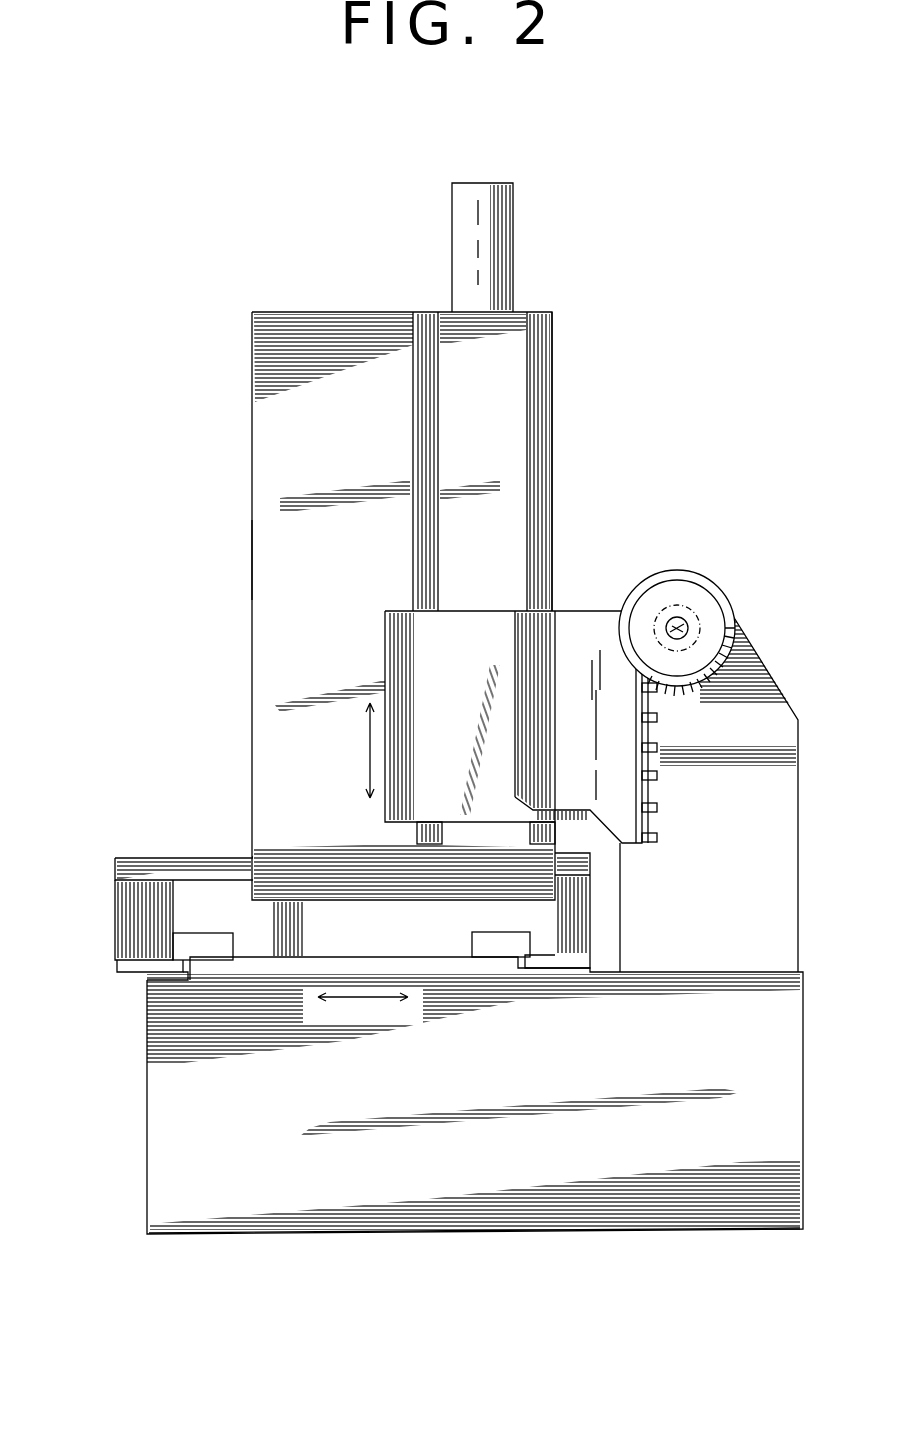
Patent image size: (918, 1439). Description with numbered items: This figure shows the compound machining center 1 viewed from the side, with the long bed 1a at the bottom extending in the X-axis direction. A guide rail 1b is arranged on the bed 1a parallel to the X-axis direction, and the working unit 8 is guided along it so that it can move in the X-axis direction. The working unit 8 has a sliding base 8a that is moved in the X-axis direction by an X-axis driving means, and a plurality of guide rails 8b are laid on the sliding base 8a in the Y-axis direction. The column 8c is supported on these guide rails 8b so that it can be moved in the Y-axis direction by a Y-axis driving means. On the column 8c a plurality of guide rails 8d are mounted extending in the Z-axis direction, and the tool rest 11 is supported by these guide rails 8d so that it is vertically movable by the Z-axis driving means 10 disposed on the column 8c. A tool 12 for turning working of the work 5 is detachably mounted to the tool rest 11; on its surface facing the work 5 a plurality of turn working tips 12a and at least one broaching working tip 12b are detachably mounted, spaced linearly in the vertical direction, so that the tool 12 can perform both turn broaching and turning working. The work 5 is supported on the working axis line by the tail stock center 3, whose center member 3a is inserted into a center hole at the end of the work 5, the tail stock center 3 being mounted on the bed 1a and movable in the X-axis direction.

The compound machining center 1 is at (139, 1037).
The bed 1a is at (293, 1213).
The guide rail 1b is at (178, 947).
The tail stock center 3 is at (740, 698).
The center member 3a is at (670, 625).
The work 5 is at (722, 609).
The working unit 8 is at (337, 297).
The sliding base 8a is at (175, 885).
The guide rails 8b is at (213, 867).
The column 8c is at (273, 550).
The guide rails 8d is at (535, 385).
The Z-axis driving means 10 is at (465, 195).
The tool rest 11 is at (385, 657).
The tool 12 is at (578, 623).
The turn working tips 12a is at (658, 808).
The broaching working tip 12b is at (650, 658).